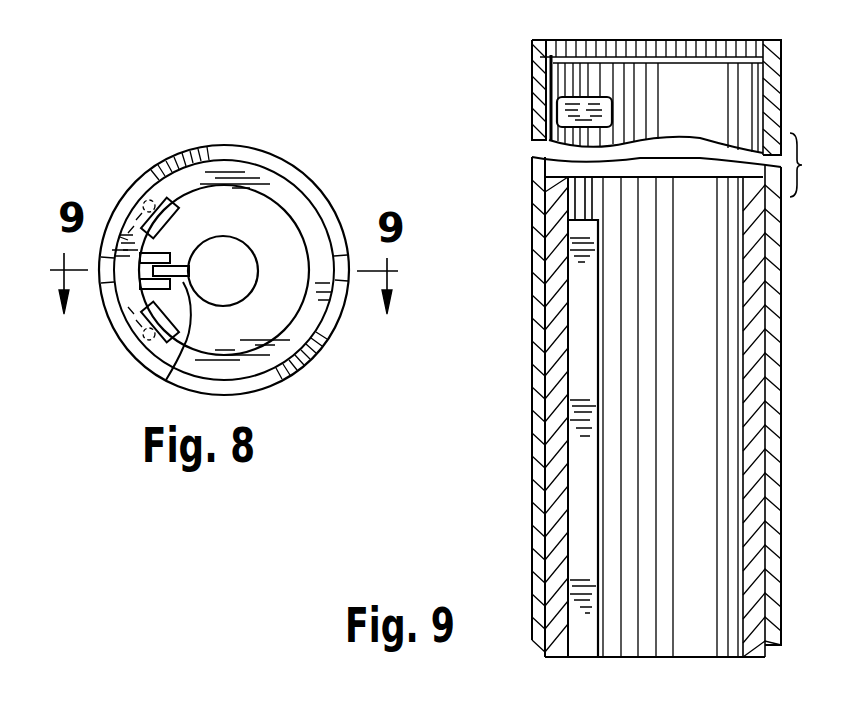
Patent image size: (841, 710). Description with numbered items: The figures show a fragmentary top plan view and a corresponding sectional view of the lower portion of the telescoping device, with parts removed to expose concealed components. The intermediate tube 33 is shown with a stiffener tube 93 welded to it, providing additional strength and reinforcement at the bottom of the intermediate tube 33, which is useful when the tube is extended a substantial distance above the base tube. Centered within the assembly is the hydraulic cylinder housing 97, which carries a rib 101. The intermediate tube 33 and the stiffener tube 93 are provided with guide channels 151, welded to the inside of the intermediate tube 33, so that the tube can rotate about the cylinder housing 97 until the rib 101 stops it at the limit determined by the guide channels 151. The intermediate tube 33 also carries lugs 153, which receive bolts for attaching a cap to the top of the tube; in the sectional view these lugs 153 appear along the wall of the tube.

In FIG. 8, the intermediate tube 33 is at (282, 160).
In FIG. 9, the intermediate tube 33 is at (541, 485).
In FIG. 8, the stiffener tube 93 is at (298, 217).
In FIG. 9, the stiffener tube 93 is at (567, 593).
In FIG. 8, the hydraulic cylinder housing 97 is at (240, 282).
In FIG. 8, the rib 101 is at (167, 378).
In FIG. 8, the guide channels 151 is at (128, 300).
In FIG. 9, the guide channels 151 is at (587, 535).
In FIG. 8, the lugs 153 is at (157, 200).
In FIG. 9, the lugs 153 is at (558, 112).